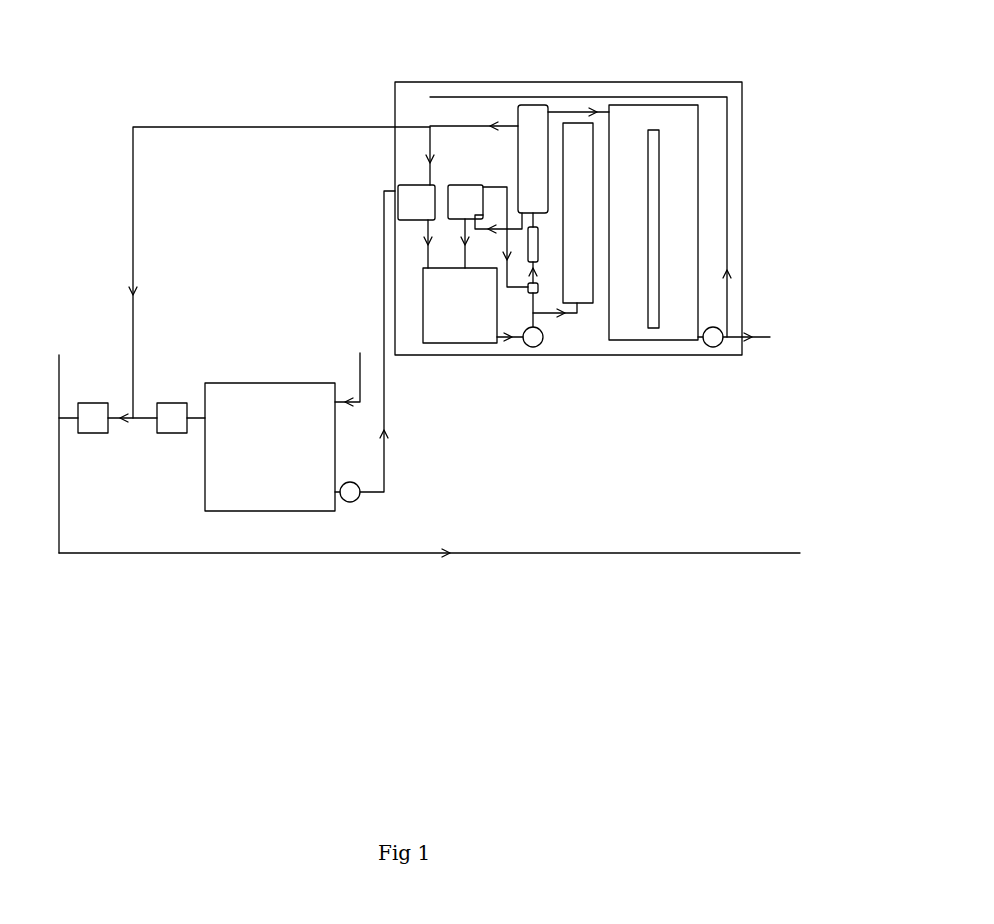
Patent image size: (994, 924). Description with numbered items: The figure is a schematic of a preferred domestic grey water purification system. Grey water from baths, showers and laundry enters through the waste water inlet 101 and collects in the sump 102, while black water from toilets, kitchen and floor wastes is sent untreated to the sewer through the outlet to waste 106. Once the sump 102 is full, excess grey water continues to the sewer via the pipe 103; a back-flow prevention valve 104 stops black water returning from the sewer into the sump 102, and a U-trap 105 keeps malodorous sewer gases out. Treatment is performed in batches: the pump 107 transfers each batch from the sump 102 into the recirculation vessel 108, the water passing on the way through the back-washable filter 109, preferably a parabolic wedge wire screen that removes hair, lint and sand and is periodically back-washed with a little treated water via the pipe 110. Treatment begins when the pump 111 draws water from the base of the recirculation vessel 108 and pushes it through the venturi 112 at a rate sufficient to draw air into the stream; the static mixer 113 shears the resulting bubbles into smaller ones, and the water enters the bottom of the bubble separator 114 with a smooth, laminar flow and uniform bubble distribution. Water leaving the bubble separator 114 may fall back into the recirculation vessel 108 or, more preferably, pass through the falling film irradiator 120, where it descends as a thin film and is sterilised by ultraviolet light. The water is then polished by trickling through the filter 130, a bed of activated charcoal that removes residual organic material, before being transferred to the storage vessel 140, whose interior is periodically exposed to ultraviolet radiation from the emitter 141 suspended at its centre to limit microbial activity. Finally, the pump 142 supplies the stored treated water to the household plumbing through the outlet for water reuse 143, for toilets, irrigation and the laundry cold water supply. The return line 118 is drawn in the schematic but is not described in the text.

The waste water inlet 101 is at (355, 367).
The sump 102 is at (245, 383).
The pipe 103 is at (190, 410).
The back-flow prevention valve 104 is at (180, 433).
The U-trap 105 is at (90, 403).
The outlet to waste 106 is at (610, 553).
The pump 107 is at (355, 500).
The recirculation vessel 108 is at (470, 352).
The filter 109 is at (398, 185).
The pipe 110 is at (430, 140).
The pump 111 is at (530, 347).
The venturi 112 is at (539, 292).
The static mixer 113 is at (539, 242).
The bubble separator 114 is at (523, 105).
The return line 118 is at (265, 127).
The falling film irradiator 120 is at (463, 185).
The filter 130 is at (605, 122).
The storage vessel 140 is at (700, 125).
The emitter 141 is at (660, 240).
The pump 142 is at (710, 347).
The outlet for water reuse 143 is at (760, 340).